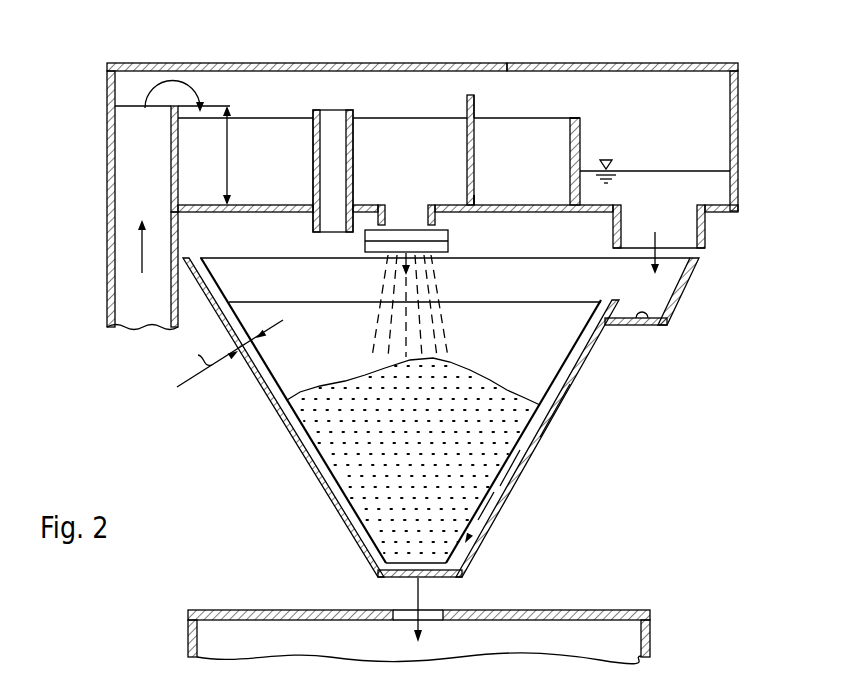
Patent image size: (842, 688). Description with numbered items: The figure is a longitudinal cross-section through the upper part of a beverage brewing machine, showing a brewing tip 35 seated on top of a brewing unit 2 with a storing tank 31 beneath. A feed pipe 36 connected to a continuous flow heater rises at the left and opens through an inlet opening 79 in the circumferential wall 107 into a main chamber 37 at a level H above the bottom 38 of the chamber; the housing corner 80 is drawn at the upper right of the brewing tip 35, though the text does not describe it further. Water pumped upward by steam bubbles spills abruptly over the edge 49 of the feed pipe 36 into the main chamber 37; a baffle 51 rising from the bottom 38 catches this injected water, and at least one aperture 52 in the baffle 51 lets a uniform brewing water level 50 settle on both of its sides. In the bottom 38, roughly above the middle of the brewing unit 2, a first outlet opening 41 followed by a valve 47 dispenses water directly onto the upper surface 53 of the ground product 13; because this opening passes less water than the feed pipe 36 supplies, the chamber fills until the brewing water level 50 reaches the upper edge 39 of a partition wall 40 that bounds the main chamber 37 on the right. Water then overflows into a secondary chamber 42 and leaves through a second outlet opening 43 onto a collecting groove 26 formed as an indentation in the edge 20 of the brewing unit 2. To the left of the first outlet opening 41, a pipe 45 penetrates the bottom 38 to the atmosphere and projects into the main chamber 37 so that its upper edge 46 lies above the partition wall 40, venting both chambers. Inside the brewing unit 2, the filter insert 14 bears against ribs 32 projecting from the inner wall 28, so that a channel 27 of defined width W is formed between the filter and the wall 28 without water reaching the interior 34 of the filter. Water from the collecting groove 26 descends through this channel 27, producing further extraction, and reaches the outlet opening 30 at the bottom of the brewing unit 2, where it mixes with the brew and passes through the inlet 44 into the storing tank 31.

The brewing unit 2 is at (572, 398).
The product 13 is at (465, 468).
The filter insert 14 is at (252, 376).
The edge 20 is at (188, 255).
The collecting groove 26 is at (660, 325).
The channel 27 is at (535, 425).
The wall 28 is at (478, 498).
The outlet opening 30 is at (412, 578).
The storing tank 31 is at (627, 610).
The ribs 32 is at (500, 485).
The interior 34 is at (297, 373).
The brewing tip 35 is at (672, 63).
The feed pipe 36 is at (125, 285).
The main chamber 37 is at (265, 135).
The bottom 38 is at (190, 204).
The upper edge 39 is at (600, 98).
The partition wall 40 is at (570, 145).
The first outlet opening 41 is at (418, 213).
The secondary chamber 42 is at (692, 137).
The second outlet opening 43 is at (680, 238).
The inlet 44 is at (438, 618).
The pipe 45 is at (313, 130).
The upper edge 46 is at (350, 98).
The valve 47 is at (440, 240).
The edge 49 is at (133, 105).
The brewing water level 50 is at (512, 118).
The baffle 51 is at (467, 125).
The aperture 52 is at (474, 200).
The upper surface 53 is at (347, 378).
The inlet opening 79 is at (575, 90).
The housing 80 is at (718, 63).
The circumferential wall 107 is at (738, 90).